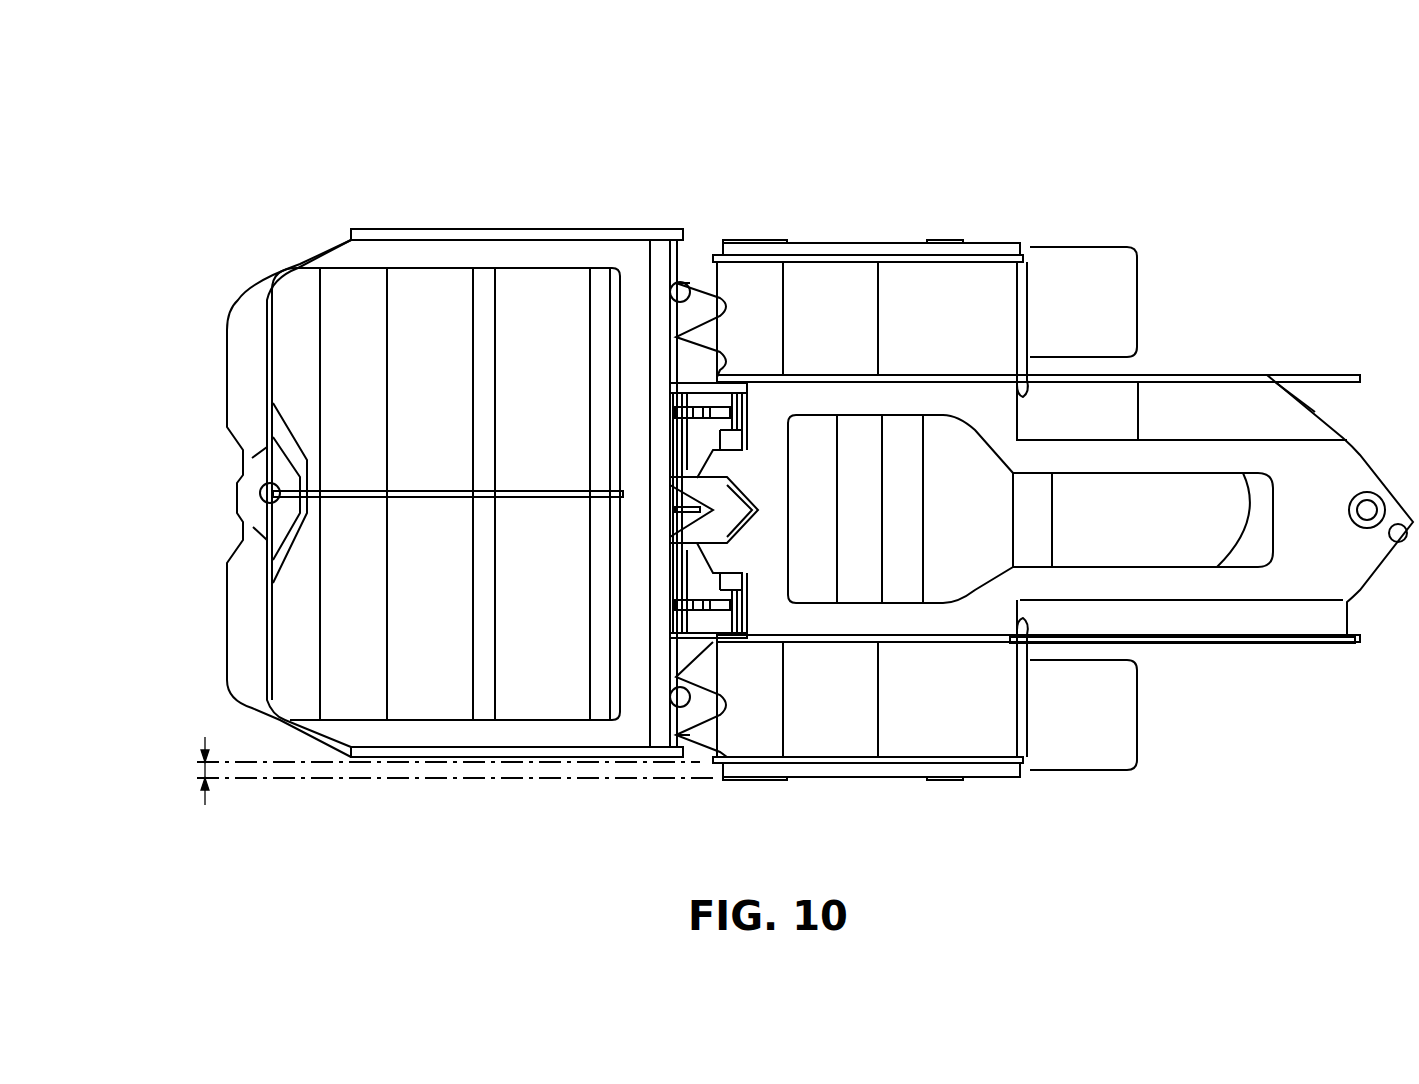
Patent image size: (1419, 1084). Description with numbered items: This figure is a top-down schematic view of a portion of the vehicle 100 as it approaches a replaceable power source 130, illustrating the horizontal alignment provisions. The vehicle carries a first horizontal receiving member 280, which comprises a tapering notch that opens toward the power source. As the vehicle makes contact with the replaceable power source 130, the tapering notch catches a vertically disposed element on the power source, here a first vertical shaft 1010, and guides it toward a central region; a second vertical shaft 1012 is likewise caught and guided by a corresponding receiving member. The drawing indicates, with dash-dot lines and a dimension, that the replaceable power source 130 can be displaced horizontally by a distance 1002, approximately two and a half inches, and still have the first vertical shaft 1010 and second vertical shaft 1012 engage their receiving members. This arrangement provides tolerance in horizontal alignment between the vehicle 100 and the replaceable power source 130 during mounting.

The vehicle 100 is at (1018, 152).
The replaceable power source 130 is at (298, 228).
The first horizontal receiving member 280 is at (690, 281).
The first vertical shaft 1010 is at (680, 287).
The second vertical shaft 1012 is at (686, 703).
The distance 1002 is at (200, 770).